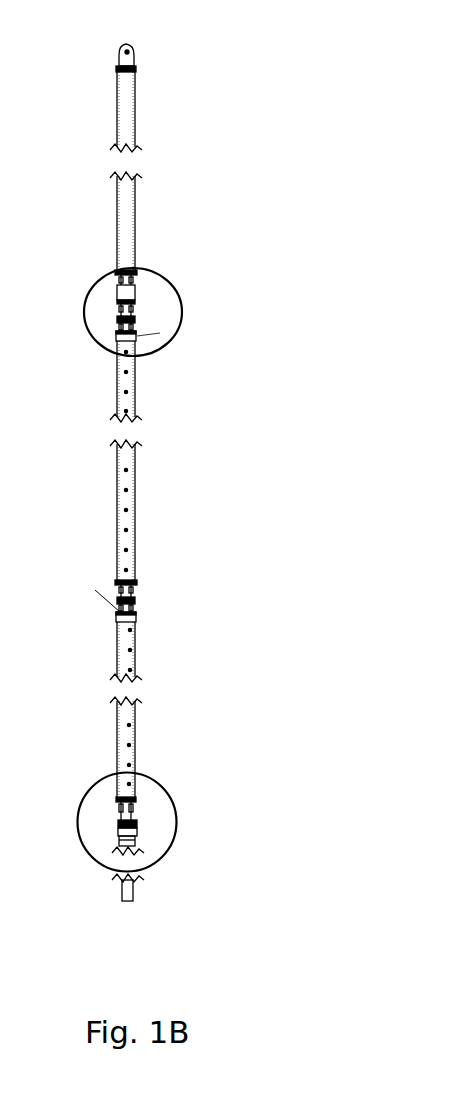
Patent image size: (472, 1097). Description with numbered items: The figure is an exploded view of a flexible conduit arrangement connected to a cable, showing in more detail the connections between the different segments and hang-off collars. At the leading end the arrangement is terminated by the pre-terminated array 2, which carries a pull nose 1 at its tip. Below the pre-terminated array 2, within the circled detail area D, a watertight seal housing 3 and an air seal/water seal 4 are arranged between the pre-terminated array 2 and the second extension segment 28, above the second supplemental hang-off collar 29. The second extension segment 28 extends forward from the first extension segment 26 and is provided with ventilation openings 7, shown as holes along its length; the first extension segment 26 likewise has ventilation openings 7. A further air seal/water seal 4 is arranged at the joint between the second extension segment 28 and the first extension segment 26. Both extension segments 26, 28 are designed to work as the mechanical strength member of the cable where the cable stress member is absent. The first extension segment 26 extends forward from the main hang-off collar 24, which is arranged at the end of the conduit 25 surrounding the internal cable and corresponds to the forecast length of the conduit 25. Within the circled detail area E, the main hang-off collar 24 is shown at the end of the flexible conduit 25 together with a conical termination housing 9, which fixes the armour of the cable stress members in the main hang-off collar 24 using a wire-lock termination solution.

The pull nose 1 is at (131, 55).
The pre-terminated array 2 is at (132, 108).
The watertight seal housing 3 is at (133, 291).
The air seal/water seal 4 is at (133, 318).
The second supplemental hang-off collar 29 is at (118, 335).
The detail area D is at (170, 345).
The ventilation openings 7 is at (126, 470).
The second extension segment 28 is at (131, 503).
The first extension segment 26 is at (133, 657).
The detail area E is at (163, 787).
The main hang-off collar 24 is at (121, 823).
The conical termination housing 9 is at (137, 825).
The conduit 25 is at (135, 890).